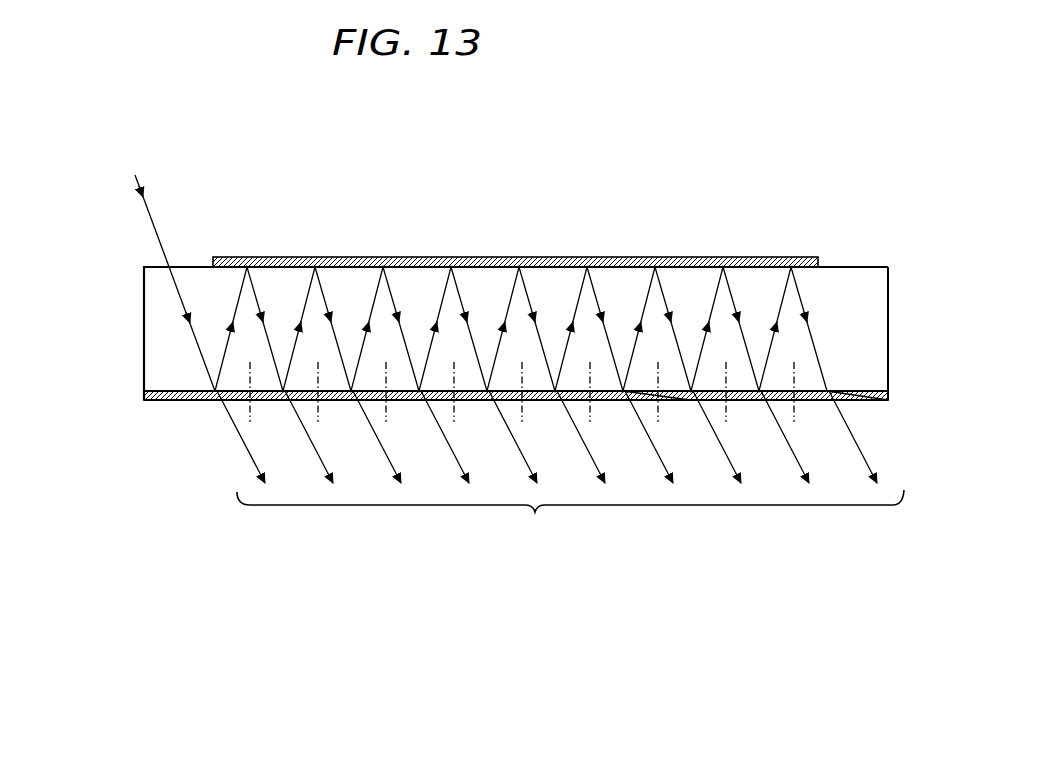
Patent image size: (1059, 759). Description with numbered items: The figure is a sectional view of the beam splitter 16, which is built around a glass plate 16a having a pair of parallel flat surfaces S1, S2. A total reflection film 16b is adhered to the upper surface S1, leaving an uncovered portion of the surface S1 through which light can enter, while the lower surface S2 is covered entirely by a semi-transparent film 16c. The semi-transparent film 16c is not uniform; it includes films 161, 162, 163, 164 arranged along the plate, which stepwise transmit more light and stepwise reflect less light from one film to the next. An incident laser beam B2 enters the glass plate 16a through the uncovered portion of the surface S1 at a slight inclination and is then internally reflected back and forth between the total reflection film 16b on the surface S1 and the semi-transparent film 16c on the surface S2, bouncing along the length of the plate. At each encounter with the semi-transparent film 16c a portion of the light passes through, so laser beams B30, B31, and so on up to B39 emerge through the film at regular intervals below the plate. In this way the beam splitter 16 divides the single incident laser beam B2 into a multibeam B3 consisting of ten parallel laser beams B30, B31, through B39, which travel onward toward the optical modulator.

The beam splitter 16 is at (829, 138).
The glass plate 16a is at (157, 312).
The total reflection film 16b is at (481, 257).
The semi-transparent film 16c is at (130, 412).
The film 161 is at (167, 402).
The film 162 is at (500, 396).
The film 163 is at (709, 393).
The film 164 is at (857, 402).
The surface S1 is at (860, 266).
The surface S2 is at (852, 387).
The incident laser beam B2 is at (153, 225).
The multibeam B3 is at (570, 476).
The laser beam B30 is at (243, 443).
The laser beam B31 is at (302, 430).
The laser beam B39 is at (845, 425).